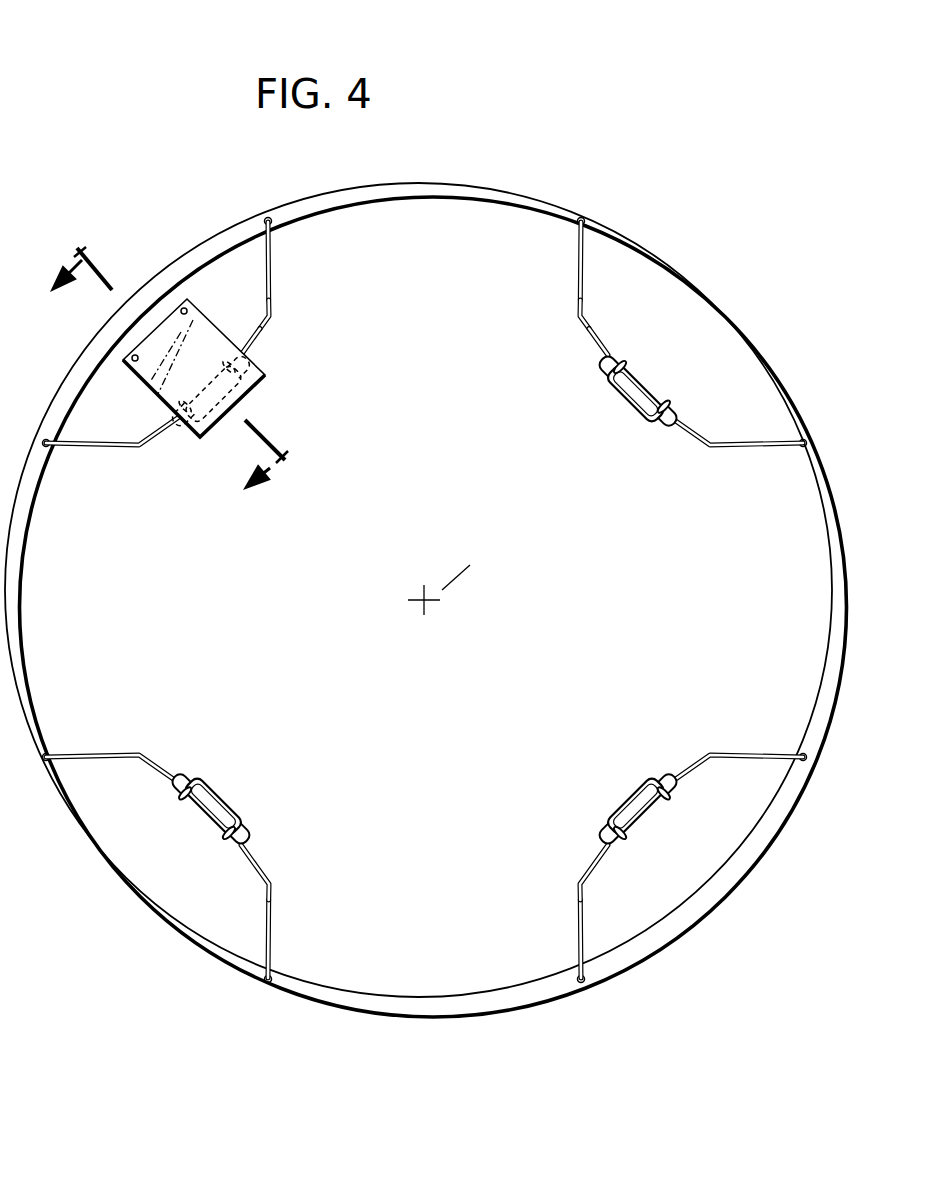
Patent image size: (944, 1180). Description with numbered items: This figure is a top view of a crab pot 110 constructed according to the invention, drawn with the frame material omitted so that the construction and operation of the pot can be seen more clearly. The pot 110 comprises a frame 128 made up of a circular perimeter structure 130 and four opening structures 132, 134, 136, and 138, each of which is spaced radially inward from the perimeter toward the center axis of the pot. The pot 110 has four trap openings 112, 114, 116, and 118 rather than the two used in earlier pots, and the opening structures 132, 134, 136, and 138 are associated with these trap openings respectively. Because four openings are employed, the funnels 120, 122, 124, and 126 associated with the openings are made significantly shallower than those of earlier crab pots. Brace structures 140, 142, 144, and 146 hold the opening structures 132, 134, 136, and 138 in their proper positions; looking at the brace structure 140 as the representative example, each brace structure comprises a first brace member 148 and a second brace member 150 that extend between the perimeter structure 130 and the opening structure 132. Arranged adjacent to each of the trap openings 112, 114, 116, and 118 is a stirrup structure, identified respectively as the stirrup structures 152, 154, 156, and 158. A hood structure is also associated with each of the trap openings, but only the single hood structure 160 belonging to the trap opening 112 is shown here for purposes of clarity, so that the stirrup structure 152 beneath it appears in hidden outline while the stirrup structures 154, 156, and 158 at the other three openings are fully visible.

The crab pot 110 is at (426, 566).
The frame 128 is at (426, 581).
The perimeter structure 130 is at (532, 205).
The trap opening 112 is at (251, 407).
The trap opening 114 is at (571, 391).
The trap opening 116 is at (577, 773).
The trap opening 118 is at (264, 773).
The funnel 120 is at (310, 292).
The funnel 122 is at (522, 261).
The funnel 124 is at (718, 725).
The funnel 126 is at (137, 725).
The opening structure 132 is at (262, 335).
The opening structure 134 is at (583, 330).
The opening structure 136 is at (585, 863).
The opening structure 138 is at (260, 863).
The brace structure 140 is at (320, 316).
The brace structure 142 is at (526, 316).
The brace structure 144 is at (512, 930).
The brace structure 146 is at (326, 930).
The first brace member 148 is at (115, 447).
The second brace member 150 is at (275, 281).
The stirrup structure 152 is at (266, 388).
The stirrup structure 154 is at (585, 385).
The stirrup structure 156 is at (585, 820).
The stirrup structure 158 is at (265, 820).
The hood structure 160 is at (202, 438).